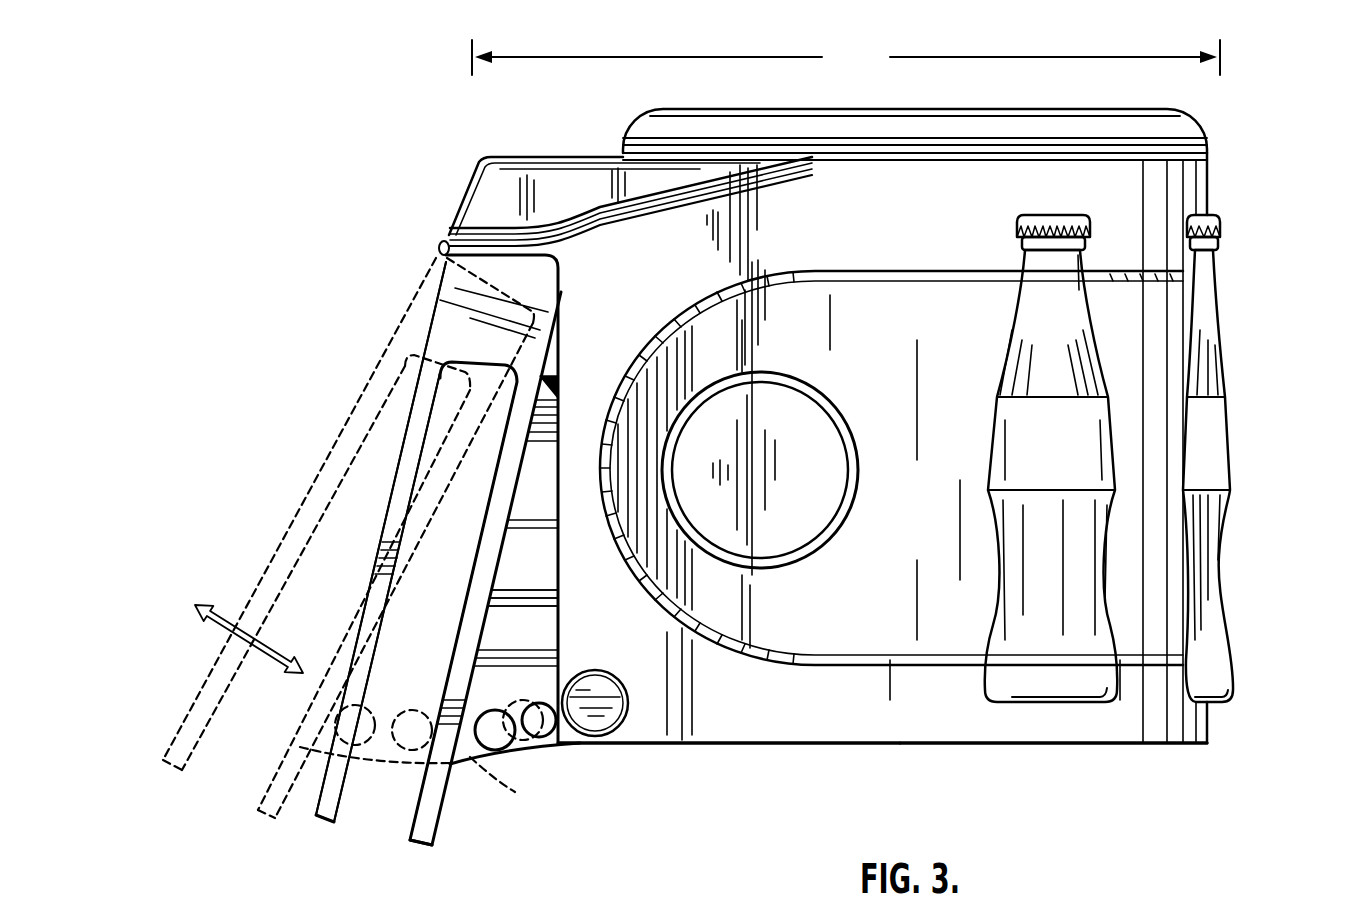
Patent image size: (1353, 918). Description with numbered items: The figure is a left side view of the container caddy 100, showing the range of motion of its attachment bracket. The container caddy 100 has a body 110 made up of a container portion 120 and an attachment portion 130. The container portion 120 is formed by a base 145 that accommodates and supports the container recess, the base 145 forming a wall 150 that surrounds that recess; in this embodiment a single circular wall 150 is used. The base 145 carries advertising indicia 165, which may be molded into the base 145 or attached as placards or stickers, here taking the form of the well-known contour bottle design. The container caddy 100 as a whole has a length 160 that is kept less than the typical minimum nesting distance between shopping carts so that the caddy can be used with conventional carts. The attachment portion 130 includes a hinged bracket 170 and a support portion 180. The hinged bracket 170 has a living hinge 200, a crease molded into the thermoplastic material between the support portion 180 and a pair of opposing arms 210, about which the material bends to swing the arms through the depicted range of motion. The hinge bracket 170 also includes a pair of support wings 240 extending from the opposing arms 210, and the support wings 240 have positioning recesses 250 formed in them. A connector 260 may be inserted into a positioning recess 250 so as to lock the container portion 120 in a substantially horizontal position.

The container caddy 100 is at (496, 138).
The body 110 is at (1203, 125).
The container portion 120 is at (1208, 158).
The attachment portion 130 is at (455, 190).
The base 145 is at (842, 725).
The wall 150 is at (925, 725).
The length 160 is at (846, 57).
The advertising indicia 165 is at (1213, 442).
The hinged bracket 170 is at (385, 340).
The support portion 180 is at (500, 158).
The living hinge 200 is at (440, 248).
The opposing arms 210 is at (472, 830).
The support wings 240 is at (546, 616).
The positioning recesses 250 is at (533, 748).
The connector 260 is at (616, 722).